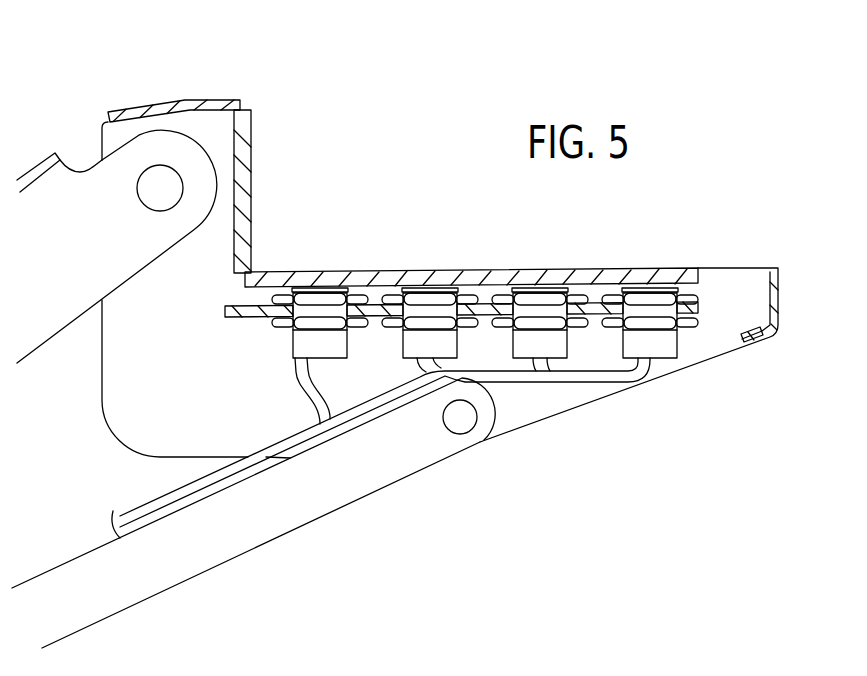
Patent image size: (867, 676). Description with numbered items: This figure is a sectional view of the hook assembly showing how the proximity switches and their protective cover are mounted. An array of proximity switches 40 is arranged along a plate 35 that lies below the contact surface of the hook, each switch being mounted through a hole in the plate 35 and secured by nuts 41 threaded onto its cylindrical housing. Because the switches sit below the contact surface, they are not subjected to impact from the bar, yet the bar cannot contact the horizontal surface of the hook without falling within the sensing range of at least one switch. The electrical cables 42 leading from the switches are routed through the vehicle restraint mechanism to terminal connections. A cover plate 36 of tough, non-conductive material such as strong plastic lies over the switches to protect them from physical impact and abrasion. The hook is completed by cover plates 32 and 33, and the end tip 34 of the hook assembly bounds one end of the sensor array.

The cover plate 32 is at (231, 99).
The cover plate 33 is at (252, 152).
The end tip 34 is at (780, 293).
The plate 35 is at (227, 310).
The cover plate 36 is at (437, 268).
The proximity switch 40 is at (668, 347).
The nut 41 is at (690, 321).
The electrical cable 42 is at (632, 376).